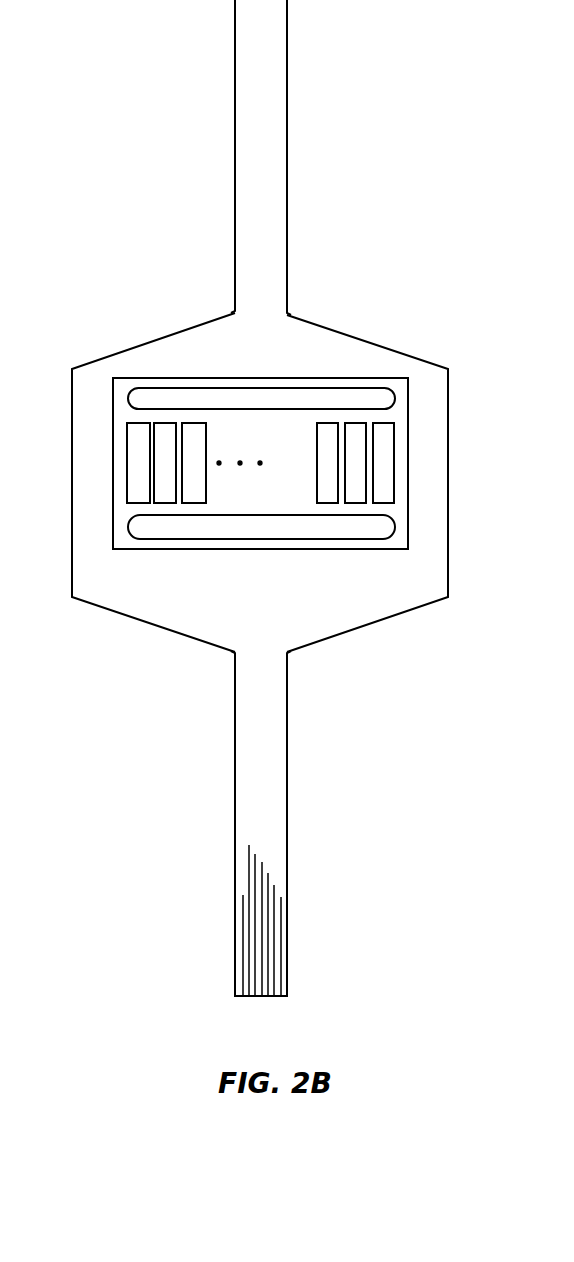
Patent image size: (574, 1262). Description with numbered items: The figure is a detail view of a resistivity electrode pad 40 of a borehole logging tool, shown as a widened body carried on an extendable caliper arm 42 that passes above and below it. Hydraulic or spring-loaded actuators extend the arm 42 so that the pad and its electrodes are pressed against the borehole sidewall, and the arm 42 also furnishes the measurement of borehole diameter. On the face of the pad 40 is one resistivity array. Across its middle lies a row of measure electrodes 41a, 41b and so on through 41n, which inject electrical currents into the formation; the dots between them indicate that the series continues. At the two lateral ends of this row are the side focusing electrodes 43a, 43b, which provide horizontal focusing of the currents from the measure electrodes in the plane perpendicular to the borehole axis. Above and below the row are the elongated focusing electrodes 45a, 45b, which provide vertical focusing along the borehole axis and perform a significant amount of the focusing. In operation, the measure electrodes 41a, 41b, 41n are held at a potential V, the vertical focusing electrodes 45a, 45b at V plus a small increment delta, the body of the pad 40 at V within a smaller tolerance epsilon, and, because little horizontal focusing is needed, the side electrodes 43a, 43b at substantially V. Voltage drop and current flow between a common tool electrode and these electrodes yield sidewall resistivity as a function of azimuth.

The sensor head 40 is at (320, 315).
The extendable caliper arm 42 is at (286, 191).
The measure electrode 41a is at (170, 445).
The measure electrode 41b is at (193, 488).
The measure electrode 41n is at (353, 445).
The focusing electrode 43a is at (137, 457).
The focusing electrode 43b is at (387, 457).
The focusing electrode 45a is at (208, 376).
The focusing electrode 45b is at (385, 527).